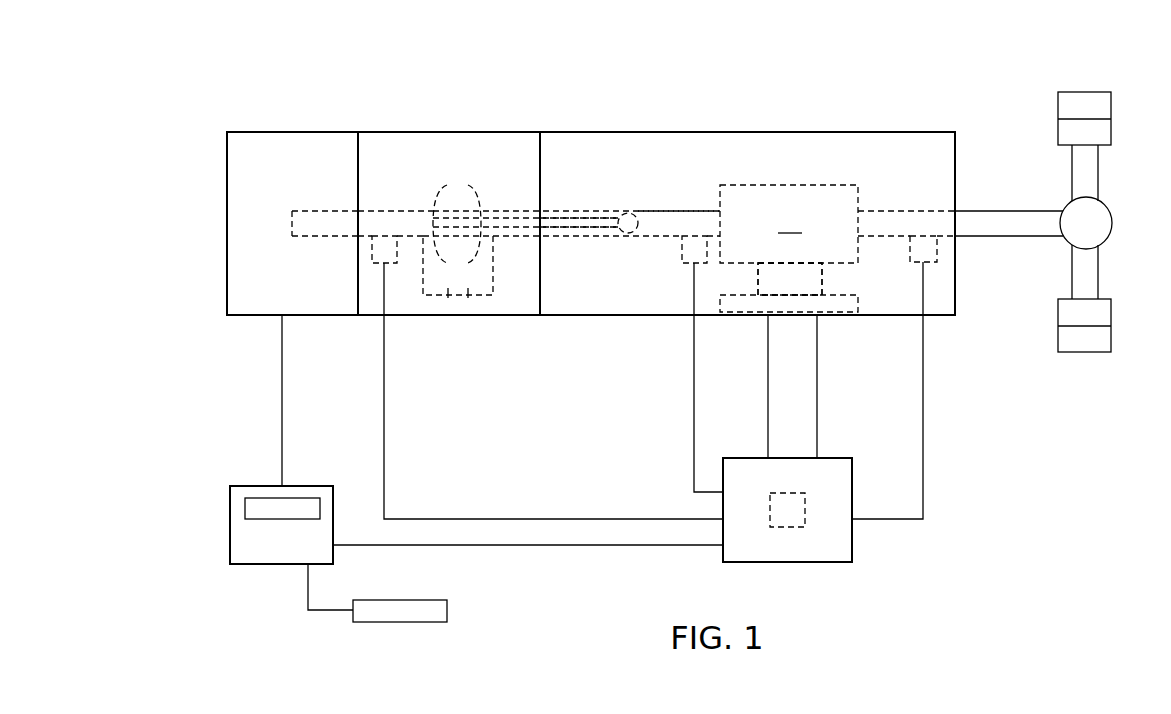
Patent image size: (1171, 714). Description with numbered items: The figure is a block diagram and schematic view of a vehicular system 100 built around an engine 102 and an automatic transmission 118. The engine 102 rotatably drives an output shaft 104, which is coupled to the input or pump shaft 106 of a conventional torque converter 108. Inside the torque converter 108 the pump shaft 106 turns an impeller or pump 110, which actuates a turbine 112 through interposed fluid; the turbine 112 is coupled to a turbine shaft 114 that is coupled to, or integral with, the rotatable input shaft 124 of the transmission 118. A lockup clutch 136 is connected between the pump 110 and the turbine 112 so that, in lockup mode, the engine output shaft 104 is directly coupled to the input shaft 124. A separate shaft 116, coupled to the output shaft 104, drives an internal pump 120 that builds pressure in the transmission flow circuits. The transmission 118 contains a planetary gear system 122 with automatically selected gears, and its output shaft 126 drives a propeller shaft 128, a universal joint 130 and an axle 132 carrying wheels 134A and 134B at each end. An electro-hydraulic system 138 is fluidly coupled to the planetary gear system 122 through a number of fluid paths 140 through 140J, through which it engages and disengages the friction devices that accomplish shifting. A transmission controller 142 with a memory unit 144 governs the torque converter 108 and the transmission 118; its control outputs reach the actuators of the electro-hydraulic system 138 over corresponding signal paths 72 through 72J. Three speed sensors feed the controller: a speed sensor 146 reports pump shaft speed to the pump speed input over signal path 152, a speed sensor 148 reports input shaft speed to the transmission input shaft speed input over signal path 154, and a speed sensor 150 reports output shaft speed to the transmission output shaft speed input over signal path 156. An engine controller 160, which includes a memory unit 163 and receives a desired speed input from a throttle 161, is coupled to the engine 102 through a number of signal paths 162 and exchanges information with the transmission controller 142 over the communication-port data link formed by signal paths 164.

The vehicular system 100 is at (243, 84).
The engine 102 is at (293, 131).
The output shaft 104 is at (292, 238).
The input or pump shaft 106 is at (398, 210).
The torque converter 108 is at (447, 131).
The impeller or pump 110 is at (441, 187).
The turbine 112 is at (470, 186).
The turbine shaft 114 is at (519, 210).
The shaft 116 is at (578, 229).
The automatic transmission 118 is at (712, 131).
The internal pump 120 is at (633, 213).
The planetary gear system 122 is at (789, 224).
The input shaft 124 is at (708, 210).
The output shaft 126 is at (897, 210).
The propeller shaft 128 is at (1004, 210).
The universal joint 130 is at (1112, 214).
The axle 132 is at (1098, 170).
The wheel 134A is at (1082, 91).
The wheel 134B is at (1082, 353).
The lockup clutch 136 is at (470, 298).
The electro-hydraulic system 138 is at (833, 307).
The fluid path 140 is at (758, 280).
The fluid path 140J is at (822, 280).
The transmission controller 142 is at (852, 543).
The memory unit 144 is at (805, 505).
The speed sensor 146 is at (372, 250).
The speed sensor 148 is at (682, 250).
The speed sensor 150 is at (937, 250).
The signal path 152 is at (530, 519).
The signal path 154 is at (695, 433).
The signal path 156 is at (923, 405).
The engine controller 160 is at (281, 565).
The throttle 161 is at (447, 610).
The signal paths 162 is at (283, 380).
The memory unit 163 is at (252, 497).
The signal paths 164 is at (572, 547).
The signal path 72 is at (768, 386).
The signal path 72J is at (817, 388).